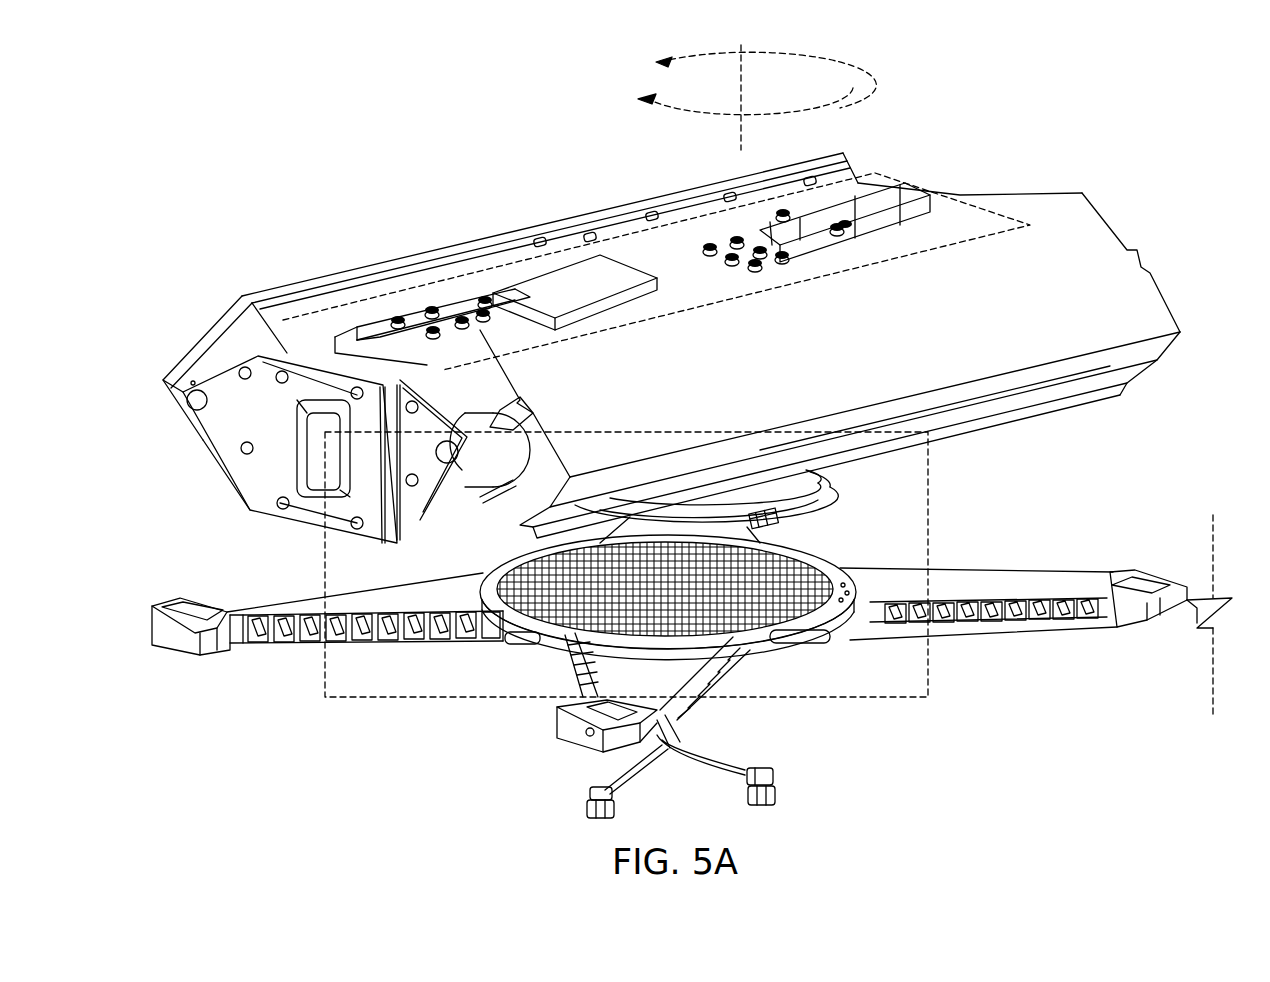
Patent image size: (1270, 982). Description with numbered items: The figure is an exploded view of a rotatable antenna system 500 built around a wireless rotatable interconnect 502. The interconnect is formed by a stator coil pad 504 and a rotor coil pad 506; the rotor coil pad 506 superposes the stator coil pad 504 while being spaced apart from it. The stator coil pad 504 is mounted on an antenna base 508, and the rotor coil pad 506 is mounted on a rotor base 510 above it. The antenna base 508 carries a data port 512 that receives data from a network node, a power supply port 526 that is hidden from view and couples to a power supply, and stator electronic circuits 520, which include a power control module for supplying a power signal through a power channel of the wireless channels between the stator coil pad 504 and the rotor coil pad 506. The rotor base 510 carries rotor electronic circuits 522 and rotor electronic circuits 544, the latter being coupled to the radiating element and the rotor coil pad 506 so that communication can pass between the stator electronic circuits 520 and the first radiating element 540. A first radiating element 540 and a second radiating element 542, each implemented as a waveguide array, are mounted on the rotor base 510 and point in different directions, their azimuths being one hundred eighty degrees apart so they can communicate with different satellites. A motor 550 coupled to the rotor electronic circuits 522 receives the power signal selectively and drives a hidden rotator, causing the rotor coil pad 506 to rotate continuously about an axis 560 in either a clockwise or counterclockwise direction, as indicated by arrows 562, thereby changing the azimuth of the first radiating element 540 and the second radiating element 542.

The rotatable antenna system 500 is at (178, 151).
The wireless rotatable interconnect 502 is at (882, 698).
The stator coil pad 504 is at (545, 650).
The rotor coil pad 506 is at (795, 495).
The antenna base 508 is at (495, 645).
The rotor base 510 is at (822, 479).
The data port 512 is at (777, 795).
The stator electronic circuits 520 is at (928, 622).
The rotor electronic circuits 522 is at (240, 415).
The power supply port 526 is at (616, 804).
The first radiating element 540 is at (1075, 250).
The second radiating element 542 is at (680, 188).
The rotor electronic circuits 544 is at (382, 290).
The motor 550 is at (546, 278).
The axis 560 is at (744, 86).
The arrows 562 is at (855, 88).